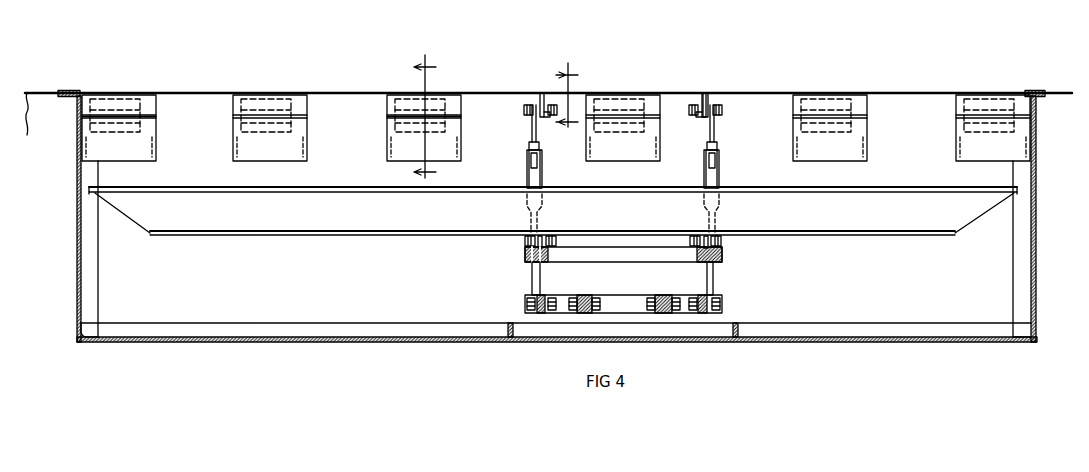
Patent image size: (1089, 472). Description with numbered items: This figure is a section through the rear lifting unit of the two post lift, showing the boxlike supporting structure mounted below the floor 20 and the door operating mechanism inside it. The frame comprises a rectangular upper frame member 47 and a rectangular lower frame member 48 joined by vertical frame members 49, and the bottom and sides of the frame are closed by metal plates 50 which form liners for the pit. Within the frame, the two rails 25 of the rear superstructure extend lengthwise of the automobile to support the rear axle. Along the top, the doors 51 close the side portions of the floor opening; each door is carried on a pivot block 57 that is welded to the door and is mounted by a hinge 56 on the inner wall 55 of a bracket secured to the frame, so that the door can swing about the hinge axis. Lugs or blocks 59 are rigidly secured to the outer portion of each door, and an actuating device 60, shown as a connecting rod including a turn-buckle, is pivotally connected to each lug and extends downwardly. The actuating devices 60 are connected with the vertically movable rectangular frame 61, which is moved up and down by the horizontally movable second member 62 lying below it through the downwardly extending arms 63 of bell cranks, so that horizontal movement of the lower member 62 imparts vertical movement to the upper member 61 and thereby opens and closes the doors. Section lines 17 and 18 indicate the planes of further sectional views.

The section line 17- 17 is at (408, 118).
The section line 18- 18 is at (554, 107).
The floor 20 is at (1063, 93).
The rails 25 is at (936, 236).
The upper frame member 47 is at (1037, 98).
The lower frame member 48 is at (1029, 342).
The vertical frame members 49 is at (1022, 308).
The metal plates 50 is at (1037, 249).
The doors 51 is at (492, 93).
The inner wall 55 is at (866, 156).
The hinge 56 is at (125, 102).
The pivot block 57 is at (154, 111).
The lugs or blocks 59 is at (705, 97).
The actuating device 60 is at (527, 167).
The rectangular frame 61 is at (722, 256).
The second member 62 is at (688, 310).
The downwardly extending arms 63 is at (532, 272).